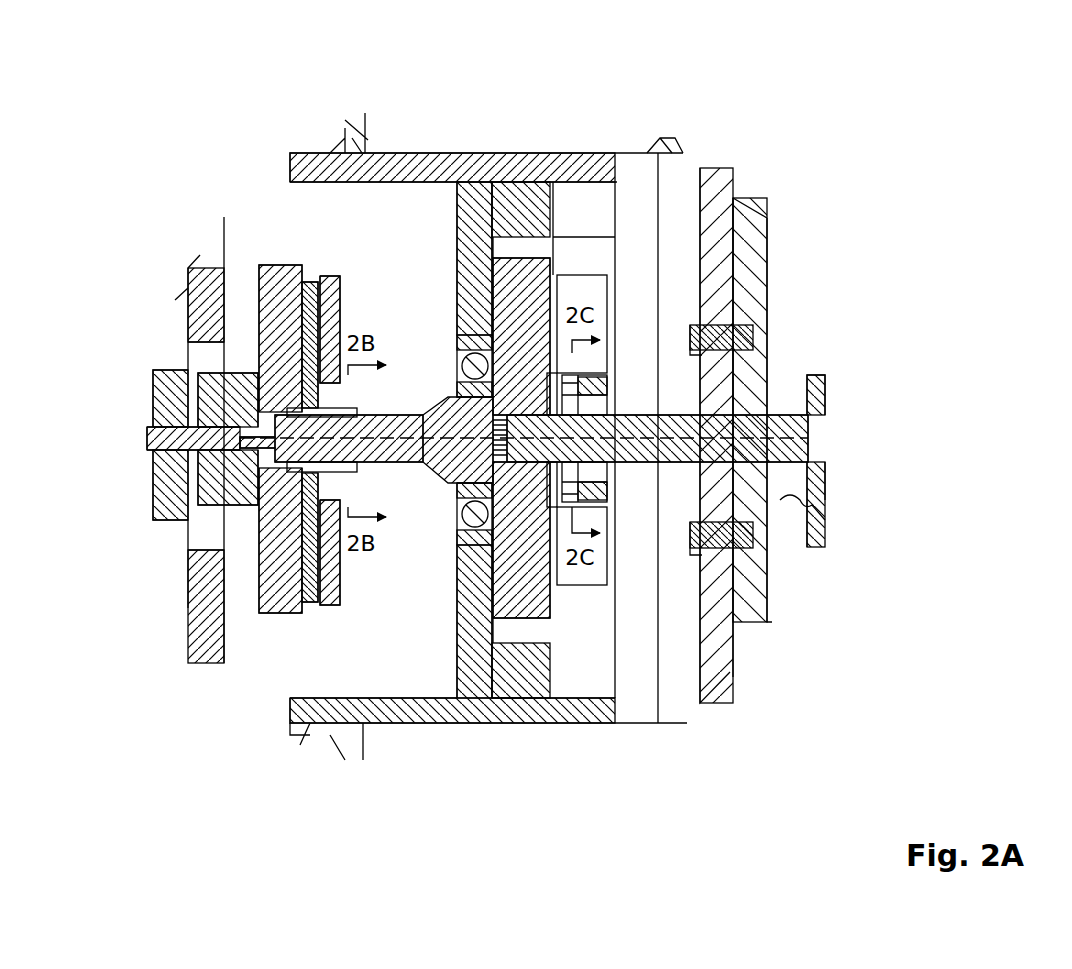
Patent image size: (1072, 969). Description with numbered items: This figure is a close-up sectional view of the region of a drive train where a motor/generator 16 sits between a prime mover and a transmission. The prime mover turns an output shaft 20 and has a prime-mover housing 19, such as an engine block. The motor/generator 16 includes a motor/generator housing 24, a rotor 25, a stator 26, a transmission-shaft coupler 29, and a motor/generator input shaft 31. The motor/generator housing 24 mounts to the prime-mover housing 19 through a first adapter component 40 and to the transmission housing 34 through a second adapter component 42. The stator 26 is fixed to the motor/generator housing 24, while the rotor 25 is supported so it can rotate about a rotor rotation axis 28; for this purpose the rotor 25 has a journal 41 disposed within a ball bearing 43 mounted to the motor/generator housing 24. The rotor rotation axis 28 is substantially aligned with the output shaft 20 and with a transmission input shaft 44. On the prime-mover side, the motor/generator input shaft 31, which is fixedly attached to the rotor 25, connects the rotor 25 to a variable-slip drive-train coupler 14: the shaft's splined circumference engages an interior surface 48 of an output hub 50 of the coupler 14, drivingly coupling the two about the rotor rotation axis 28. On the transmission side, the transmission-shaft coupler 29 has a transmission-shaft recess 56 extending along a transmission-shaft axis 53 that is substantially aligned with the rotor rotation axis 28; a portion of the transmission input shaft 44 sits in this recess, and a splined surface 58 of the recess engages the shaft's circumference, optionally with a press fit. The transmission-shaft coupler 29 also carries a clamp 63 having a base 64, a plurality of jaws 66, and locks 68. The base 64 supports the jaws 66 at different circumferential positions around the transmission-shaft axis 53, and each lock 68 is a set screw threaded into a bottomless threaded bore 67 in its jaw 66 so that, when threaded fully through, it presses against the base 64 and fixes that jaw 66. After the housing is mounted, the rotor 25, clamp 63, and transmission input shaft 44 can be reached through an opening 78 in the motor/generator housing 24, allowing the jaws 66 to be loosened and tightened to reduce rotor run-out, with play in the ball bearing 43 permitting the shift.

The variable-slip drive-train coupler 14 is at (356, 570).
The motor/generator 16 is at (541, 132).
The prime-mover housing 19 is at (172, 325).
The output shaft 20 is at (153, 497).
The motor/generator housing 24 is at (395, 150).
The rotor 25 is at (598, 725).
The stator 26 is at (558, 208).
The rotor rotation axis 28 is at (455, 495).
The transmission-shaft coupler 29 is at (515, 468).
The motor/generator input shaft 31 is at (390, 413).
The transmission housing 34 is at (738, 262).
The first adapter component 40 is at (223, 262).
The journal 41 is at (453, 340).
The second adapter component 42 is at (703, 215).
The ball bearing 43 is at (462, 352).
The transmission input shaft 44 is at (812, 522).
The interior surface 48 is at (310, 322).
The output hub 50 is at (325, 480).
The transmission-shaft axis 53 is at (496, 292).
The transmission-shaft recess 56 is at (538, 410).
The surface 58 is at (462, 620).
The clamp 63 is at (602, 356).
The base 64 is at (530, 470).
The jaw 66 is at (600, 412).
The bottomless threaded bore 67 is at (580, 385).
The lock 68 is at (587, 400).
The opening 78 is at (585, 577).